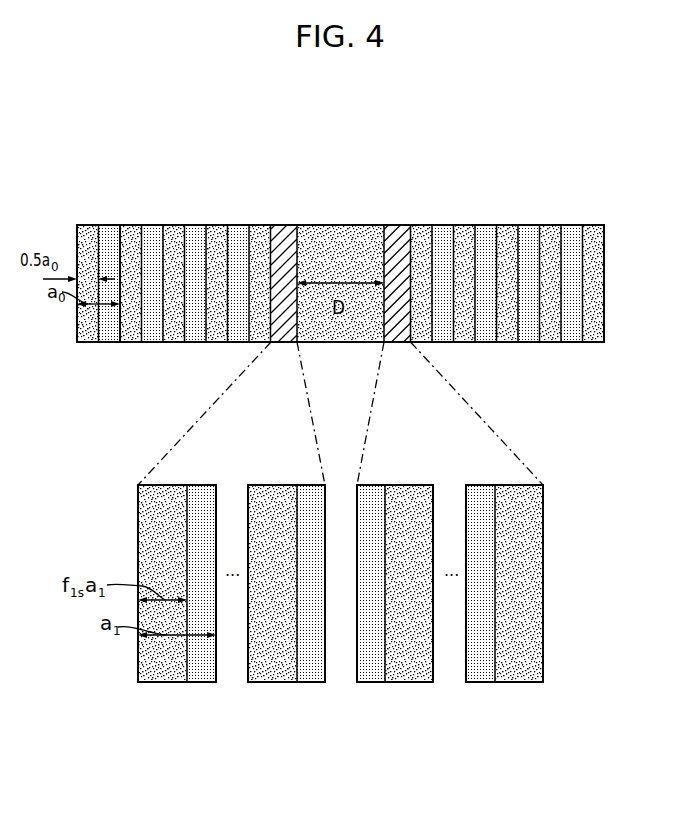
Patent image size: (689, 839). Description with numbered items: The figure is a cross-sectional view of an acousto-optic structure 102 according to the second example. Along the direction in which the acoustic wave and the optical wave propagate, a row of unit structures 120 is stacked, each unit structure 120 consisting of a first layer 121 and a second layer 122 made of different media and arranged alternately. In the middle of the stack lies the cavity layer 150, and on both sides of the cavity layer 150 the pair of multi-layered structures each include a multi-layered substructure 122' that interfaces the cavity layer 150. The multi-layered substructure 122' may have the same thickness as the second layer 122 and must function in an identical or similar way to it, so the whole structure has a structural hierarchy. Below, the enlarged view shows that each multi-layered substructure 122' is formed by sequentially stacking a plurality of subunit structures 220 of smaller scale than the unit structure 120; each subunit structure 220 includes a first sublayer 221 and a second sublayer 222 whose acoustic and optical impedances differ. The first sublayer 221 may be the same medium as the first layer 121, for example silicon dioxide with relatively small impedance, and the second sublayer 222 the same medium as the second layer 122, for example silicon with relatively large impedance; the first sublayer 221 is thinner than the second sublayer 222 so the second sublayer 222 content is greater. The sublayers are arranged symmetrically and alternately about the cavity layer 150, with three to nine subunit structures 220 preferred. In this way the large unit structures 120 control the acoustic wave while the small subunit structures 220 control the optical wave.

The acousto-optic structure 102 is at (373, 180).
The unit structure 120 is at (120, 219).
The first layer 121 is at (80, 325).
The second layer 122 is at (339, 307).
The multi-layered substructure 122' is at (340, 510).
The cavity layer 150 is at (337, 328).
The subunit structure 220 is at (216, 687).
The first sublayer 221 is at (263, 683).
The second sublayer 222 is at (308, 683).